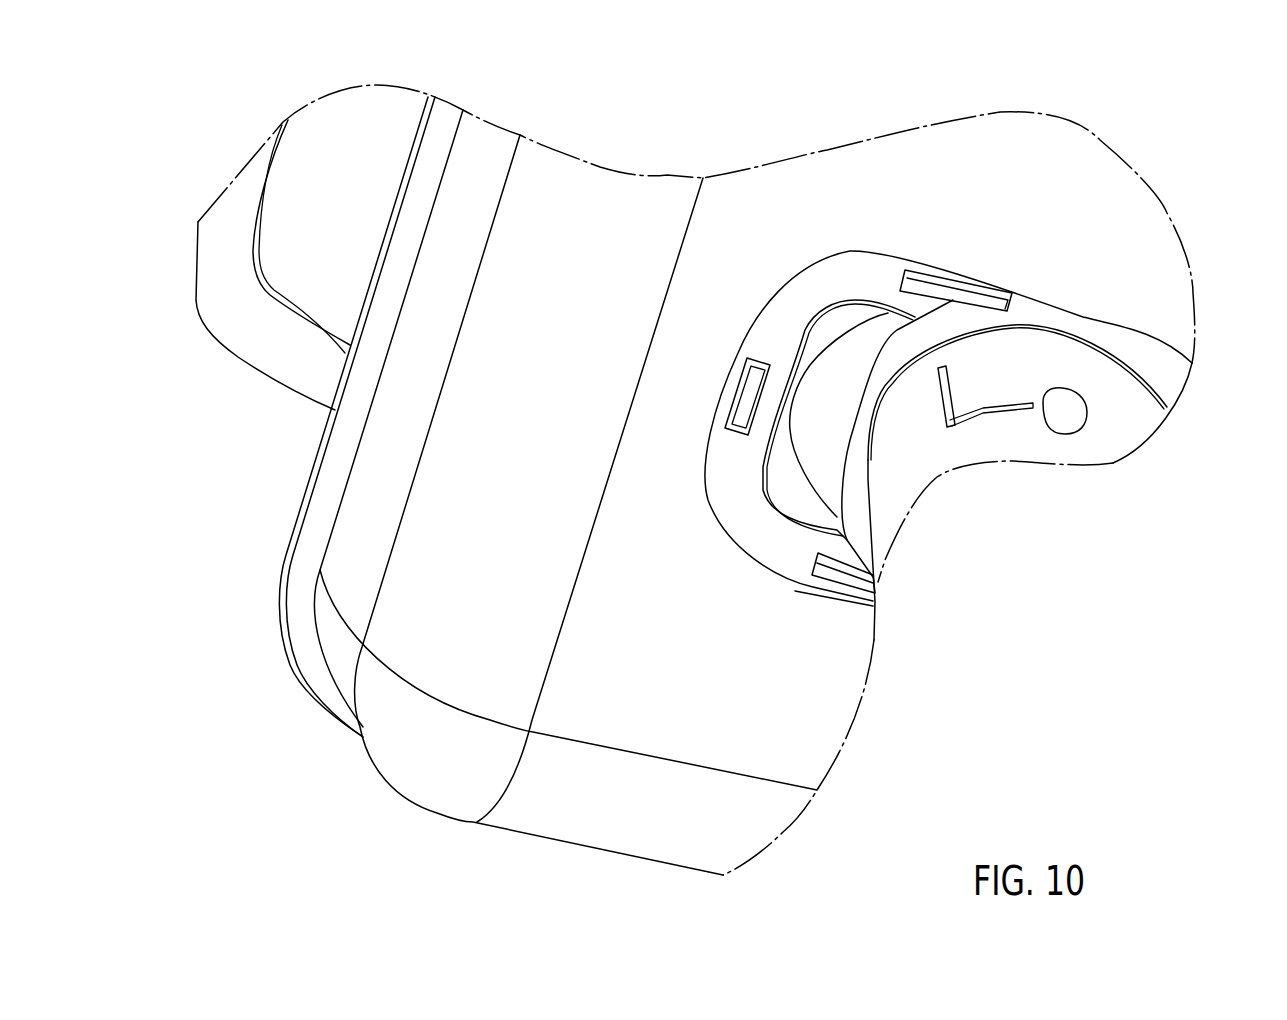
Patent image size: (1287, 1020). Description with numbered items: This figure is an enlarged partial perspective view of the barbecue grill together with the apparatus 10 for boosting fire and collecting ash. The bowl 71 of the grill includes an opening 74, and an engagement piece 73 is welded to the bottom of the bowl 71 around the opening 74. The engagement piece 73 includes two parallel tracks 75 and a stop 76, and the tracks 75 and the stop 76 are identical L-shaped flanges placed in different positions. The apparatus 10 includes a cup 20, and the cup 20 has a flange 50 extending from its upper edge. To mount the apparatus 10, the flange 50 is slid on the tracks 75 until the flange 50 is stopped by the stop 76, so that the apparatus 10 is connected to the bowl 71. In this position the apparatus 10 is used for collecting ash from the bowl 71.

The apparatus 10 is at (725, 462).
The cup 20 is at (1093, 450).
The flange 50 is at (1170, 357).
The bowl 71 is at (1085, 152).
The engagement piece 73 is at (833, 270).
The opening 74 is at (807, 447).
The tracks 75 is at (950, 293).
The stop 76 is at (747, 390).